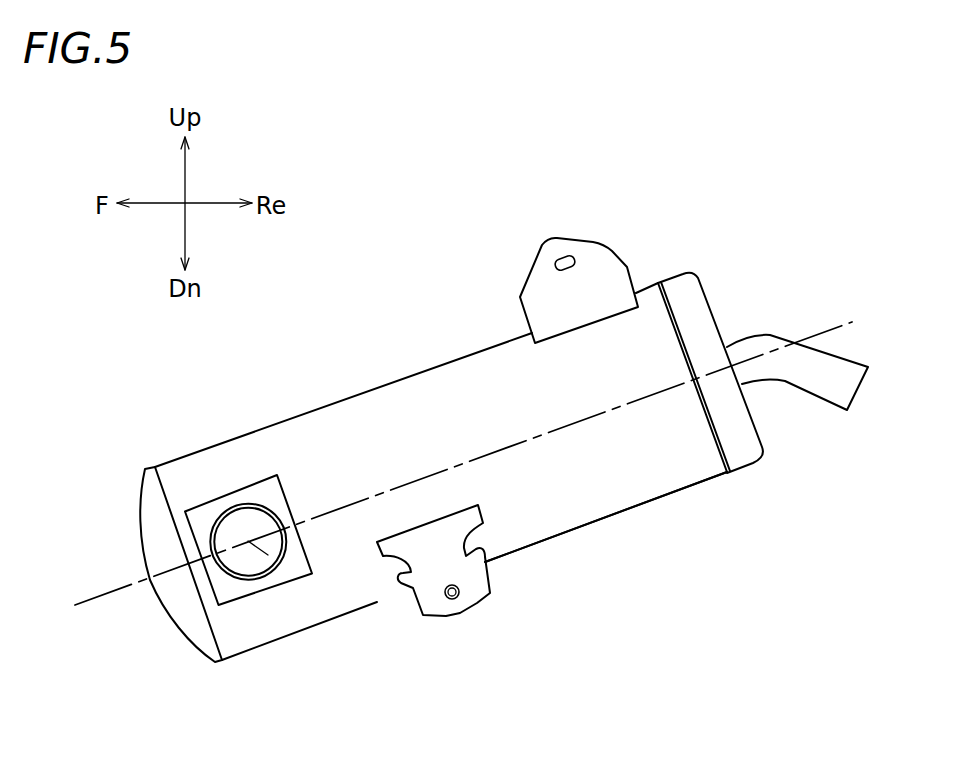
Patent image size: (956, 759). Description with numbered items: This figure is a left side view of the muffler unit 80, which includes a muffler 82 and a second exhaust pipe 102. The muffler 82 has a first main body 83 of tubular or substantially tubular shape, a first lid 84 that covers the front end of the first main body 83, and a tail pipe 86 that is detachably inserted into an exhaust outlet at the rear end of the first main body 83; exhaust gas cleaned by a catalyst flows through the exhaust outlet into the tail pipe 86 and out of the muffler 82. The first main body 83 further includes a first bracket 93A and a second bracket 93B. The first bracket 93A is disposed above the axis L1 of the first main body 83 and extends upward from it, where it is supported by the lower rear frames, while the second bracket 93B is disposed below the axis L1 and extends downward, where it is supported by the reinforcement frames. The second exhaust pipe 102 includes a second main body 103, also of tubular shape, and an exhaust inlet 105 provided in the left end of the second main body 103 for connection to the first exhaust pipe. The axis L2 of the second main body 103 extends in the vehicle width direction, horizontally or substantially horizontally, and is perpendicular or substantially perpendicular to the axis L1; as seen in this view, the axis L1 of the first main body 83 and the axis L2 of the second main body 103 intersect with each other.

The muffler unit 80 is at (485, 432).
The muffler 82 is at (657, 502).
The first main body 83 is at (568, 518).
The first lid 84 is at (153, 503).
The tail pipe 86 is at (822, 402).
The first bracket 93A is at (570, 247).
The second bracket 93B is at (477, 605).
The second exhaust pipe 102 is at (215, 565).
The second main body 103 is at (247, 504).
The exhaust inlet 105 is at (228, 575).
The axis of the first main body L1 is at (118, 588).
The axis of the second main body L2 is at (268, 555).